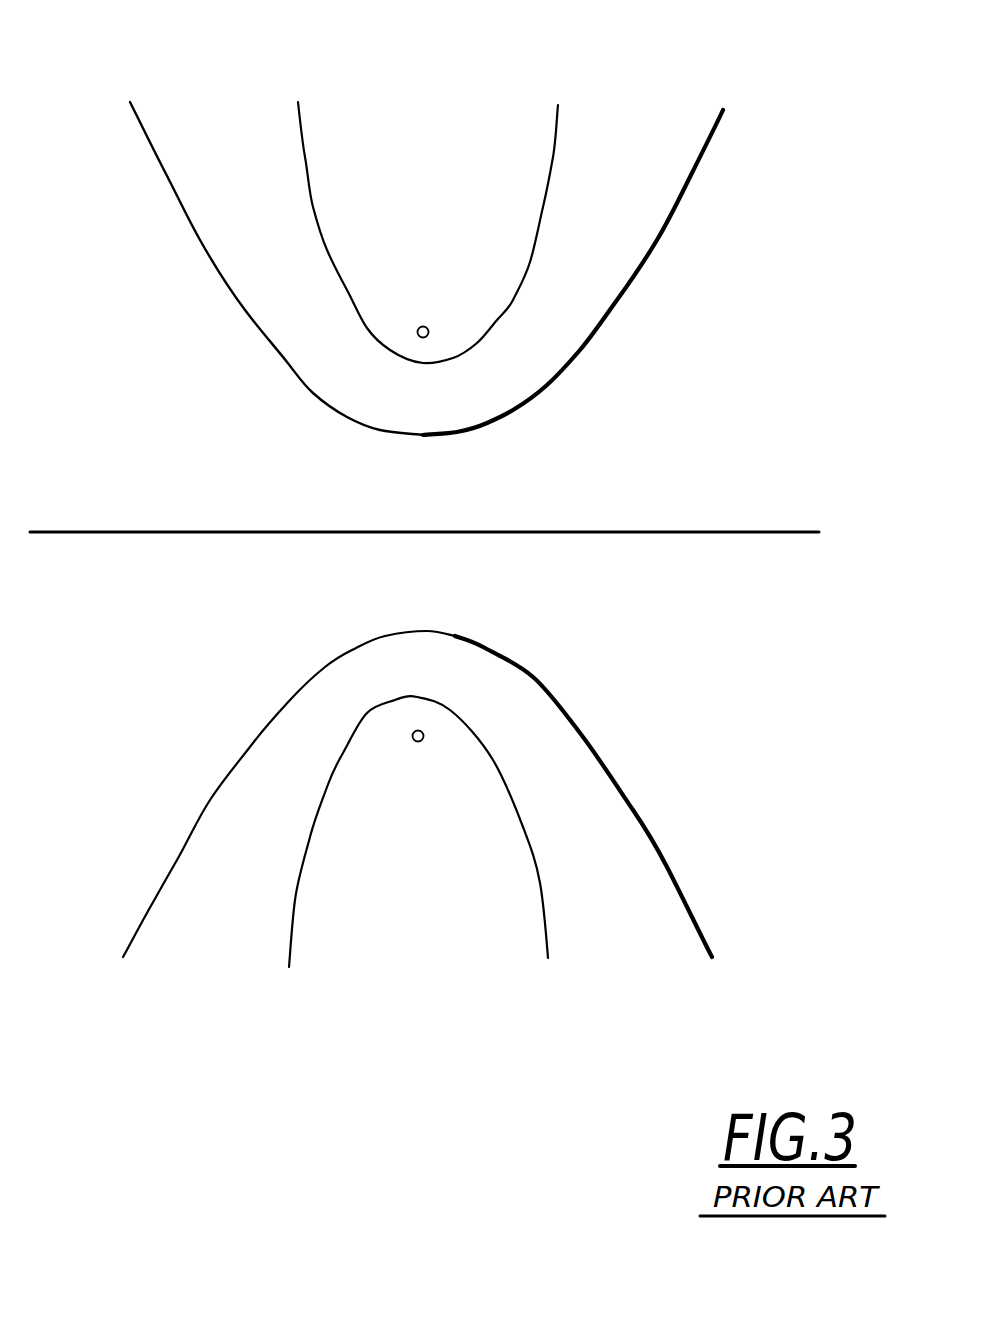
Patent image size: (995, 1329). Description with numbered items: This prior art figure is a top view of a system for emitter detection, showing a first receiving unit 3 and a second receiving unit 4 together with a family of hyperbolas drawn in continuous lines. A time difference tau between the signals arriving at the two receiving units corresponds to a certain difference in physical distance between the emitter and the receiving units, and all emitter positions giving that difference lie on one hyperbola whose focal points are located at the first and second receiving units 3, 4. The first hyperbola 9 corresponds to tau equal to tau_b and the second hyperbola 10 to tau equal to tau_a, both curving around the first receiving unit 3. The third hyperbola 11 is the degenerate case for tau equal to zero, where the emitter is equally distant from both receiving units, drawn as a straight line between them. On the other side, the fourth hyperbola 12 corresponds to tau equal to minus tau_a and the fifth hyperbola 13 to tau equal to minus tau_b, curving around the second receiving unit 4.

The first receiving unit 3 is at (423, 731).
The second receiving unit 4 is at (429, 329).
The first hyperbola 9 is at (556, 126).
The second hyperbola 10 is at (713, 138).
The third hyperbola 11 is at (712, 531).
The fourth hyperbola 12 is at (612, 768).
The fifth hyperbola 13 is at (542, 890).